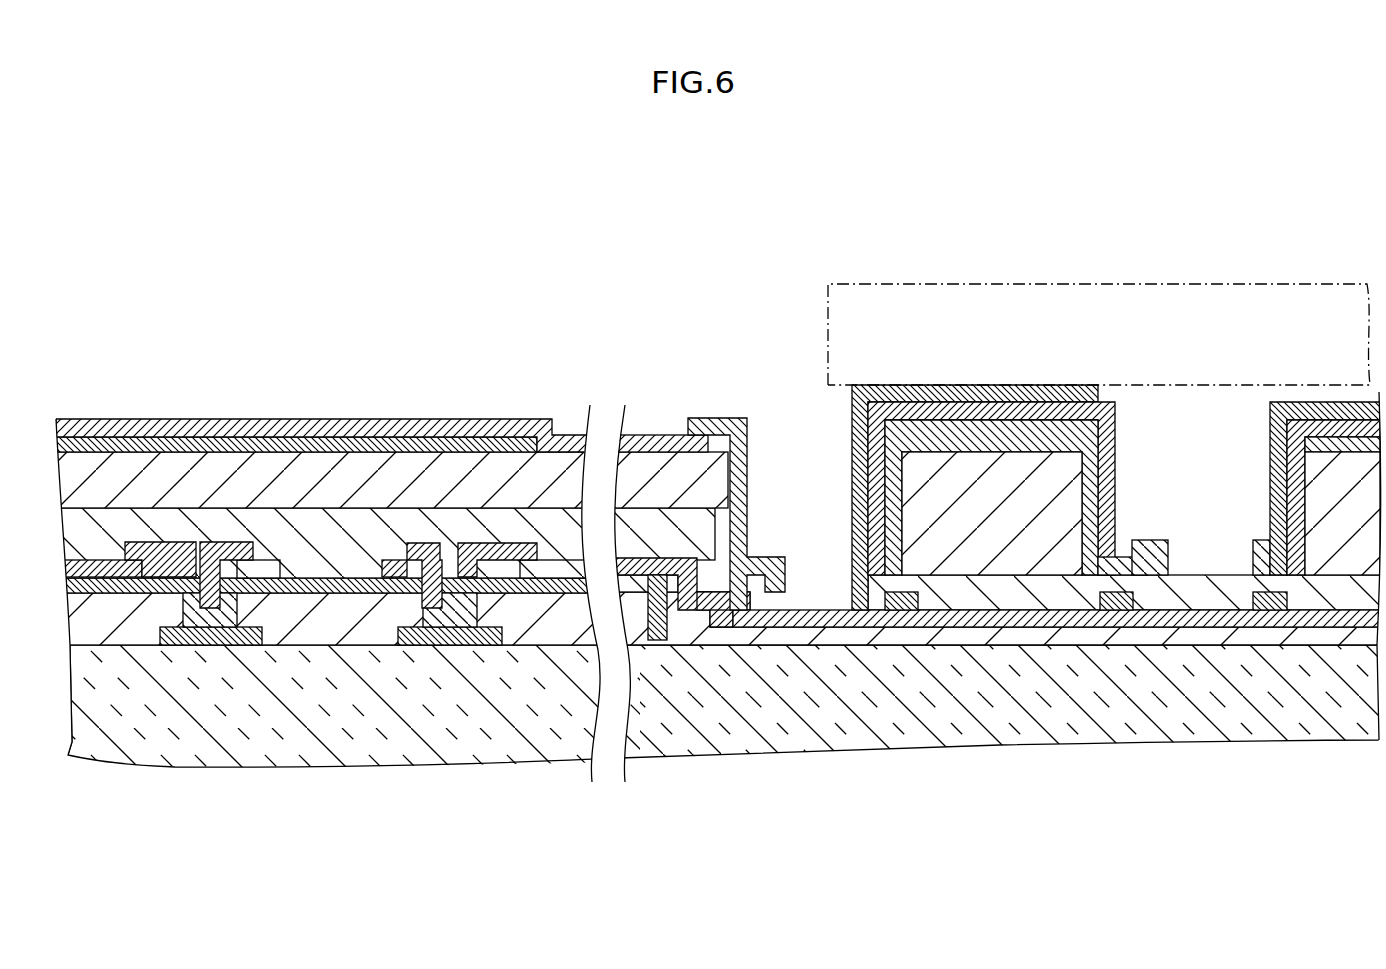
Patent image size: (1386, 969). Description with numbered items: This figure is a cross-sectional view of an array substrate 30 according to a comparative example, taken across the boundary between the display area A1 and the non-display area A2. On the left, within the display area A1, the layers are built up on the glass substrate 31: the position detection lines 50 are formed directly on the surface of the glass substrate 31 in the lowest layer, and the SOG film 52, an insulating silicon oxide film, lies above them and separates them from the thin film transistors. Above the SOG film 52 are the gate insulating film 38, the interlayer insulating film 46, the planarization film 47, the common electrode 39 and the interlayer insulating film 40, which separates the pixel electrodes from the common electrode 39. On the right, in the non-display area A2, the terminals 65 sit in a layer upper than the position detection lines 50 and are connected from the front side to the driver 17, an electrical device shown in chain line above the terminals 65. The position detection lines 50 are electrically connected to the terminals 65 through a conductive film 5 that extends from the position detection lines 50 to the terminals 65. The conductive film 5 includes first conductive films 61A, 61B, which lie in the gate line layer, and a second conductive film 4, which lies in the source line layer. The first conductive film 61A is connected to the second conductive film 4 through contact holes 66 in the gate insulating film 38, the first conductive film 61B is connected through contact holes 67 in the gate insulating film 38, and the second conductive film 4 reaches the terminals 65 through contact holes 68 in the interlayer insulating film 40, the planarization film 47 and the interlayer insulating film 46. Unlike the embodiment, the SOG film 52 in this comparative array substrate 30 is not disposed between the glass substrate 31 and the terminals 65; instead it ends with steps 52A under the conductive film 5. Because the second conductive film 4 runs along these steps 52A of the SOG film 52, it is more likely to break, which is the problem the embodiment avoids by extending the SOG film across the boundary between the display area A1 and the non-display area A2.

The second conductive film 4 is at (653, 600).
The conductive film 5 is at (540, 838).
The driver 17 is at (1058, 325).
The array substrate 30 is at (1331, 262).
The glass substrate 31 is at (130, 738).
The gate insulating film 38 is at (72, 585).
The common electrode 39 is at (105, 440).
The interlayer insulating film 40 is at (68, 424).
The interlayer insulating film 46 is at (80, 530).
The planarization film 47 is at (80, 472).
The position detection lines 50 is at (208, 647).
The SOG film 52 is at (80, 620).
The steps 52A is at (670, 585).
The first conductive film 61A is at (498, 578).
The first conductive film 61B is at (731, 612).
The terminals 65 is at (885, 385).
The contact holes 66 is at (458, 560).
The contact holes 67 is at (857, 628).
The contact holes 68 is at (738, 490).
The display area A1 is at (258, 382).
The non-display area A2 is at (921, 251).